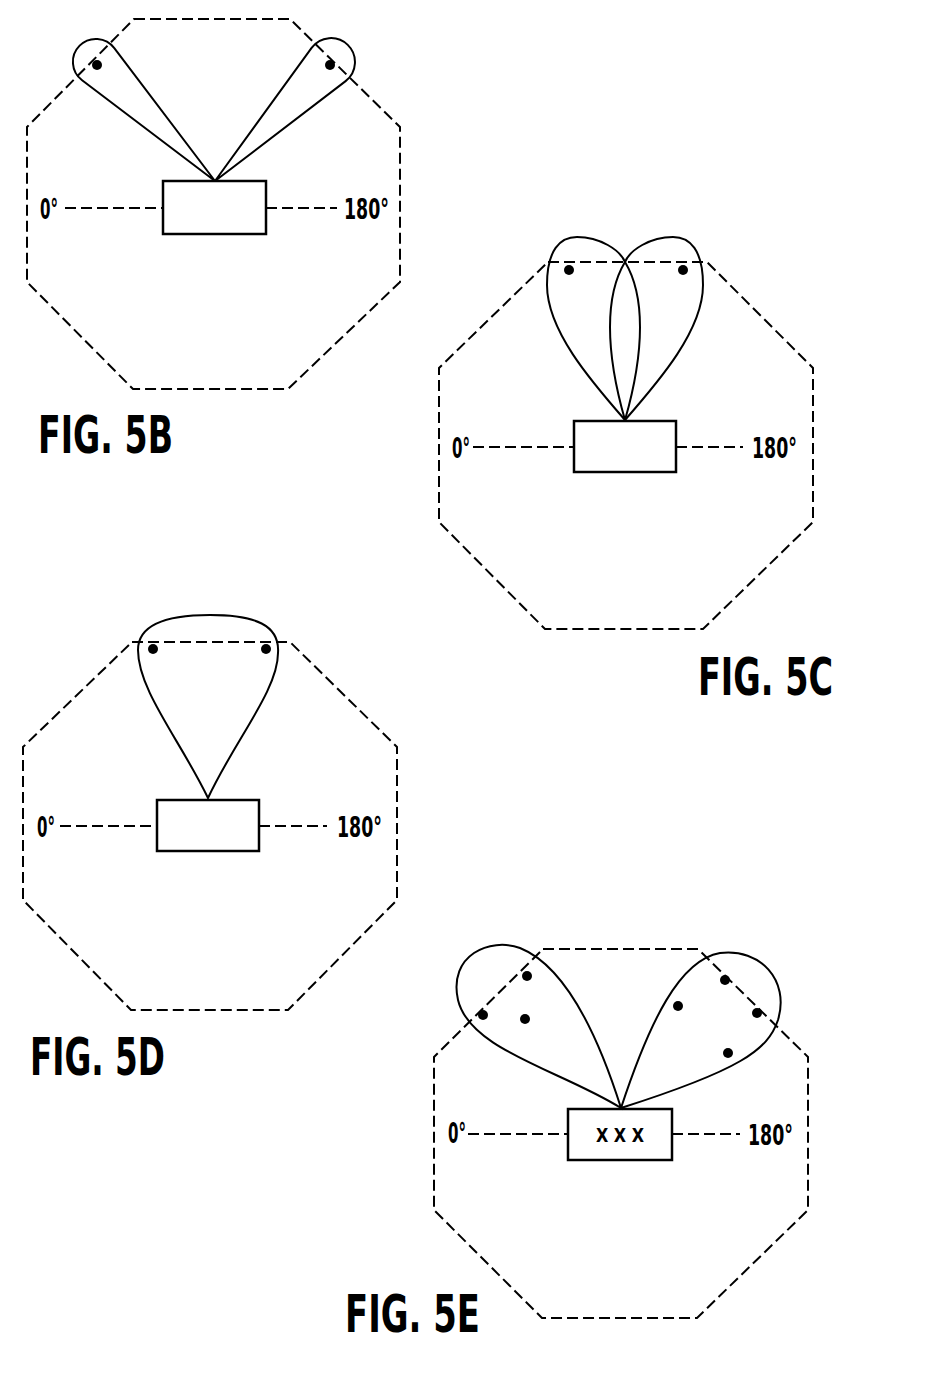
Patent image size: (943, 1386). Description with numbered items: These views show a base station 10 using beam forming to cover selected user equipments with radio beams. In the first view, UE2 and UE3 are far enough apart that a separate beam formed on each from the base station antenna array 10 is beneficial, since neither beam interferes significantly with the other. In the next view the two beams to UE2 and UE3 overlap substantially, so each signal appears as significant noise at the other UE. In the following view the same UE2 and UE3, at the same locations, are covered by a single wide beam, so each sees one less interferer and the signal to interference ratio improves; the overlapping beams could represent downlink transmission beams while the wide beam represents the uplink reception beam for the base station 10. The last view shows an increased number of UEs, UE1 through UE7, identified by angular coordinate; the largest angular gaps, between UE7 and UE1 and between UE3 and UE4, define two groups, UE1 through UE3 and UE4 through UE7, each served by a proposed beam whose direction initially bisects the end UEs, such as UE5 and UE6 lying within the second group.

In FIG. 5B, the base station 10 is at (214, 234).
In FIG. 5C, the base station 10 is at (620, 472).
In FIG. 5D, the base station 10 is at (207, 851).
In FIG. 5E, the user equipment UE1 is at (483, 1013).
In FIG. 5B, the user equipment UE2 is at (97, 65).
In FIG. 5C, the user equipment UE2 is at (569, 270).
In FIG. 5D, the user equipment UE2 is at (153, 649).
In FIG. 5E, the user equipment UE2 is at (525, 1021).
In FIG. 5B, the user equipment UE3 is at (330, 65).
In FIG. 5C, the user equipment UE3 is at (683, 270).
In FIG. 5D, the user equipment UE3 is at (266, 649).
In FIG. 5E, the user equipment UE3 is at (529, 976).
In FIG. 5E, the user equipment UE4 is at (677, 1004).
In FIG. 5E, the user equipment UE5 is at (725, 978).
In FIG. 5E, the user equipment UE6 is at (757, 1012).
In FIG. 5E, the user equipment UE7 is at (729, 1055).